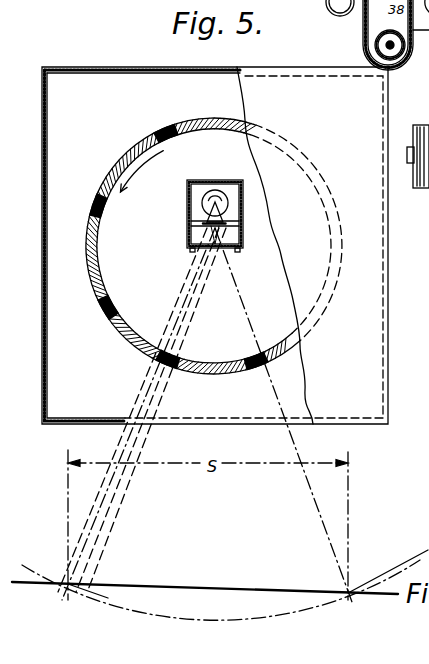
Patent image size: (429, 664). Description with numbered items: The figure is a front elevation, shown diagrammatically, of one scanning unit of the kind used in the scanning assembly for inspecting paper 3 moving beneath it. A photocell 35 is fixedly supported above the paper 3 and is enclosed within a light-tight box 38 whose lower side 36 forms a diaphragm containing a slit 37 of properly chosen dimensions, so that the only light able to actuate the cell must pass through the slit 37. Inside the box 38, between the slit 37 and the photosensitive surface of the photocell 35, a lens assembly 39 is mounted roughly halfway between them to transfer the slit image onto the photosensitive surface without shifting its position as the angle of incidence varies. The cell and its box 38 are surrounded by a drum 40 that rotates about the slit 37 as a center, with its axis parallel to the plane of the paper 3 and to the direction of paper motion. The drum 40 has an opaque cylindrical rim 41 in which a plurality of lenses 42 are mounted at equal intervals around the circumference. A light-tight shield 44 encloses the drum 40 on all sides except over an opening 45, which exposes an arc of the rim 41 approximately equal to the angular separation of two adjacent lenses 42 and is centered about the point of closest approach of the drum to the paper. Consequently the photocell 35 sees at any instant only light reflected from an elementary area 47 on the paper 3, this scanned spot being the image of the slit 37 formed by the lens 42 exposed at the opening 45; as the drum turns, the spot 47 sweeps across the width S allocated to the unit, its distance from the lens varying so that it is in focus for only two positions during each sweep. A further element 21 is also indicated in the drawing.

The paper 3 is at (263, 591).
The slotted band 21 is at (213, 374).
The photocell 35 is at (200, 203).
The lower side 36 is at (193, 250).
The slit 37 is at (240, 246).
The light-tight box 38 is at (192, 177).
The lens assembly 39 is at (143, 229).
The drum 40 is at (213, 118).
The opaque cylindrical rim 41 is at (115, 164).
The lenses 42 is at (165, 128).
The light-tight shield 44 is at (81, 66).
The opening 45 is at (262, 425).
The elementary area 47 is at (85, 581).